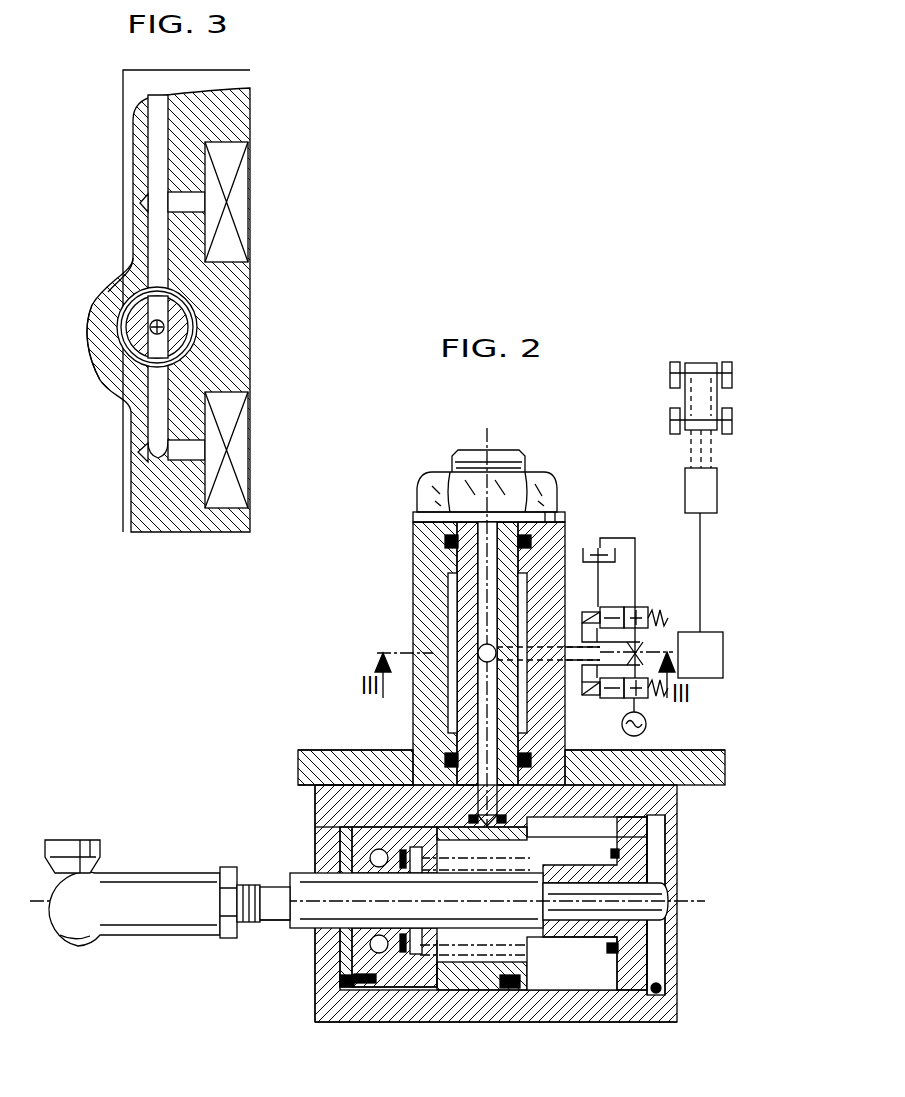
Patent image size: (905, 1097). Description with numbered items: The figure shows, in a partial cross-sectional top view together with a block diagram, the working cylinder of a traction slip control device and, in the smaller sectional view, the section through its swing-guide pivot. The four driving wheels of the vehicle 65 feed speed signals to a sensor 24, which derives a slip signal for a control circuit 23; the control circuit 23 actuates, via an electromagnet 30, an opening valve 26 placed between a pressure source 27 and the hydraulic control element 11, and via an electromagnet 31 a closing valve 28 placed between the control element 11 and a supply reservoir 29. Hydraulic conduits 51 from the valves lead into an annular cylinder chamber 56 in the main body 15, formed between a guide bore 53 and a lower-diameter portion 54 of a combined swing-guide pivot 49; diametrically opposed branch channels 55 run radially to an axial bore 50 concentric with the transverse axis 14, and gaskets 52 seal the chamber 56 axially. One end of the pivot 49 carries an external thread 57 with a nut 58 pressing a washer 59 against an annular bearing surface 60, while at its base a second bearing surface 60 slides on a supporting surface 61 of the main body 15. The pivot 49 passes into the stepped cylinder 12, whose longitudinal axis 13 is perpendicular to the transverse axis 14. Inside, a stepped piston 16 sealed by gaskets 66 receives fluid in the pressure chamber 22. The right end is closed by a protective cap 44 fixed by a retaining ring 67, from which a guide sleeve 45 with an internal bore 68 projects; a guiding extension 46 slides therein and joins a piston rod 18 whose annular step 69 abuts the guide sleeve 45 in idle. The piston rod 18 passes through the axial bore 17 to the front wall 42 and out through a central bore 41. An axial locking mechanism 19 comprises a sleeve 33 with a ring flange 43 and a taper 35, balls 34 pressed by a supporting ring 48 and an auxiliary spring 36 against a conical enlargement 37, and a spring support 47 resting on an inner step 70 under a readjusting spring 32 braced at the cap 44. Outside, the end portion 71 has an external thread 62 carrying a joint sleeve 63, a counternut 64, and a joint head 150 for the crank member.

In FIG. 2, the hydraulic control element 11 is at (570, 1022).
In FIG. 2, the stepped cylinder 12 is at (505, 1000).
In FIG. 2, the longitudinal axis 13 is at (697, 906).
In FIG. 3, the transverse axis 14 is at (116, 348).
In FIG. 2, the transverse axis 14 is at (485, 432).
In FIG. 3, the main body 15 is at (230, 262).
In FIG. 2, the main body 15 is at (318, 764).
In FIG. 2, the stepped piston 16 is at (446, 990).
In FIG. 2, the axial bore 17 is at (465, 990).
In FIG. 2, the piston rod 18 is at (312, 932).
In FIG. 2, the axial locking mechanism 19 is at (378, 802).
In FIG. 2, the pressure chamber 22 is at (480, 820).
In FIG. 2, the control circuit 23 is at (704, 678).
In FIG. 2, the sensor 24 is at (686, 492).
In FIG. 3, the opening valve 26 is at (234, 163).
In FIG. 2, the opening valve 26 is at (616, 700).
In FIG. 2, the pressure source 27 is at (646, 724).
In FIG. 3, the closing valve 28 is at (234, 438).
In FIG. 2, the closing valve 28 is at (642, 616).
In FIG. 2, the supply reservoir 29 is at (612, 548).
In FIG. 2, the electromagnet 30 is at (593, 698).
In FIG. 2, the electromagnet 31 is at (595, 612).
In FIG. 2, the readjusting spring 32 is at (618, 960).
In FIG. 2, the sleeve 33 is at (360, 965).
In FIG. 2, the balls 34 is at (400, 868).
In FIG. 2, the taper 35 is at (376, 868).
In FIG. 2, the auxiliary spring 36 is at (420, 987).
In FIG. 2, the enlargement 37 is at (378, 858).
In FIG. 2, the central bore 41 is at (318, 852).
In FIG. 2, the front wall 42 is at (342, 848).
In FIG. 2, the ring flange 43 is at (320, 812).
In FIG. 2, the protective cap 44 is at (655, 955).
In FIG. 2, the guide sleeve 45 is at (578, 867).
In FIG. 2, the guiding extension 46 is at (670, 893).
In FIG. 2, the spring support 47 is at (520, 901).
In FIG. 2, the supporting ring 48 is at (395, 987).
In FIG. 3, the swing-guide pivot 49 is at (130, 334).
In FIG. 2, the swing-guide pivot 49 is at (515, 572).
In FIG. 3, the axial bore 50 is at (164, 327).
In FIG. 2, the axial bore 50 is at (478, 700).
In FIG. 3, the hydraulic conduits 51 is at (158, 216).
In FIG. 2, the hydraulic conduits 51 is at (569, 630).
In FIG. 2, the gaskets 52 is at (440, 547).
In FIG. 3, the guide bore 53 is at (122, 314).
In FIG. 2, the guide bore 53 is at (452, 602).
In FIG. 3, the lower-diameter portion 54 is at (130, 300).
In FIG. 2, the lower-diameter portion 54 is at (462, 642).
In FIG. 3, the branch channels 55 is at (168, 313).
In FIG. 2, the branch channels 55 is at (480, 655).
In FIG. 3, the annular cylinder chamber 56 is at (142, 272).
In FIG. 2, the annular cylinder chamber 56 is at (446, 592).
In FIG. 2, the external thread 57 is at (522, 468).
In FIG. 2, the nut 58 is at (553, 490).
In FIG. 2, the washer 59 is at (565, 519).
In FIG. 2, the annular bearing surface 60 is at (416, 520).
In FIG. 2, the supporting surface 61 is at (352, 772).
In FIG. 2, the external thread 62 is at (254, 922).
In FIG. 2, the joint sleeve 63 is at (138, 920).
In FIG. 2, the counternut 64 is at (228, 938).
In FIG. 2, the vehicle 65 is at (706, 366).
In FIG. 2, the gaskets 66 is at (360, 992).
In FIG. 2, the retaining ring 67 is at (652, 1000).
In FIG. 2, the internal bore 68 is at (572, 940).
In FIG. 2, the annular step 69 is at (548, 867).
In FIG. 2, the inner step 70 is at (386, 987).
In FIG. 2, the end portion 71 is at (266, 920).
In FIG. 2, the joint head 150 is at (80, 848).